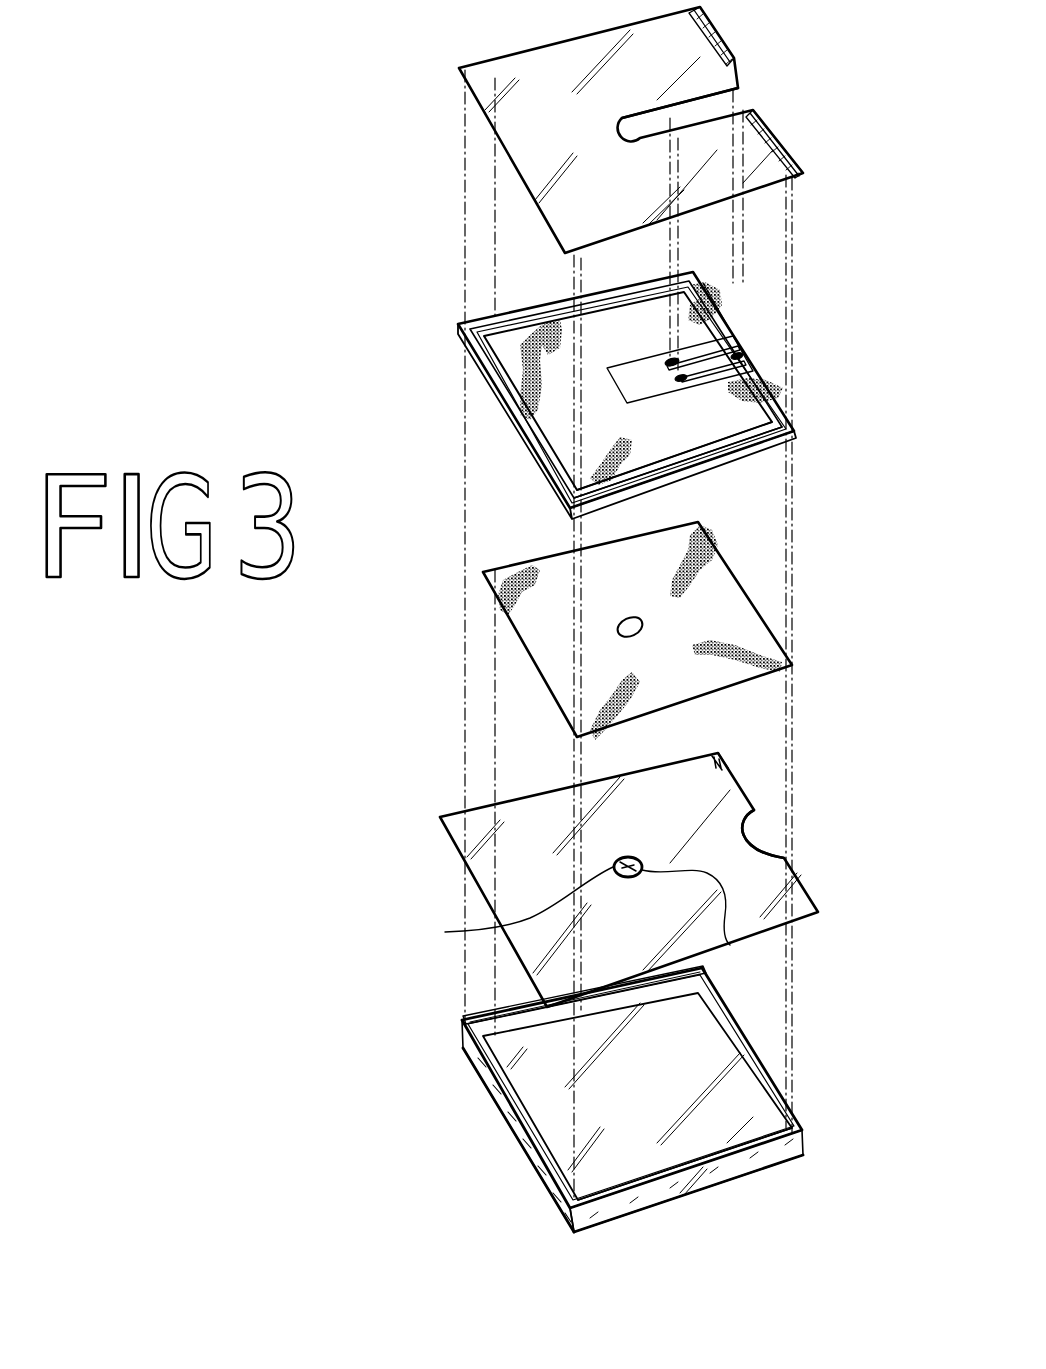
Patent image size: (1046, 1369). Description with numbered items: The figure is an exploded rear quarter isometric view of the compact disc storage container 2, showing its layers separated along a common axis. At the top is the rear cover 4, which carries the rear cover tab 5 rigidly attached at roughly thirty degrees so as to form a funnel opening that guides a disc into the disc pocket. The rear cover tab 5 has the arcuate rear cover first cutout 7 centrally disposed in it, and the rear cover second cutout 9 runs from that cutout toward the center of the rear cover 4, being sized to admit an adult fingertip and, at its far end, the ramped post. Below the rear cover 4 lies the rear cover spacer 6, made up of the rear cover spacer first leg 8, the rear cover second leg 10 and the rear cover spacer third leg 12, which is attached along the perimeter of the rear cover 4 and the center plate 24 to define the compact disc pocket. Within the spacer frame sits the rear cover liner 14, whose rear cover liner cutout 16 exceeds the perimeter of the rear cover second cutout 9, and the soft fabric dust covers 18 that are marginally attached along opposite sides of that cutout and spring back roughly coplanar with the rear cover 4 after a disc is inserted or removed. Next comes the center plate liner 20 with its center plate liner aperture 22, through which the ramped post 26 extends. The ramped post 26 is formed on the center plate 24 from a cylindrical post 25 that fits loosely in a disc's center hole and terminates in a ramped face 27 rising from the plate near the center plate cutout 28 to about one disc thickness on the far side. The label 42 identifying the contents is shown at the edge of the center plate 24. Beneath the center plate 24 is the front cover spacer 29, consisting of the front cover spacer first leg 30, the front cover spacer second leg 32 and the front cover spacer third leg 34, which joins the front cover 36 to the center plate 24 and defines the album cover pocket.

The compact disc storage container 2 is at (172, 329).
The rear cover 4 is at (415, 111).
The rear cover tab 5 is at (728, 34).
The rear cover first cutout 7 is at (741, 65).
The rear cover second cutout 9 is at (752, 108).
The rear cover spacer 6 is at (458, 326).
The rear cover spacer first leg 8 is at (706, 283).
The rear cover second leg 10 is at (499, 409).
The rear cover spacer third leg 12 is at (796, 434).
The rear cover liner 14 is at (716, 300).
The rear cover liner cutout 16 is at (693, 380).
The dust covers 18 is at (686, 377).
The center plate liner 20 is at (477, 630).
The center plate liner aperture 22 is at (644, 622).
The center plate 24 is at (398, 870).
The cylindrical post 25 is at (508, 909).
The ramped post 26 is at (730, 945).
The ramped face 27 is at (634, 858).
The center plate cutout 28 is at (758, 829).
The front cover spacer 29 is at (440, 1018).
The front cover spacer first leg 30 is at (704, 970).
The front cover spacer second leg 32 is at (523, 1124).
The front cover spacer third leg 34 is at (757, 1150).
The front cover 36 is at (474, 1117).
The label 42 is at (731, 767).